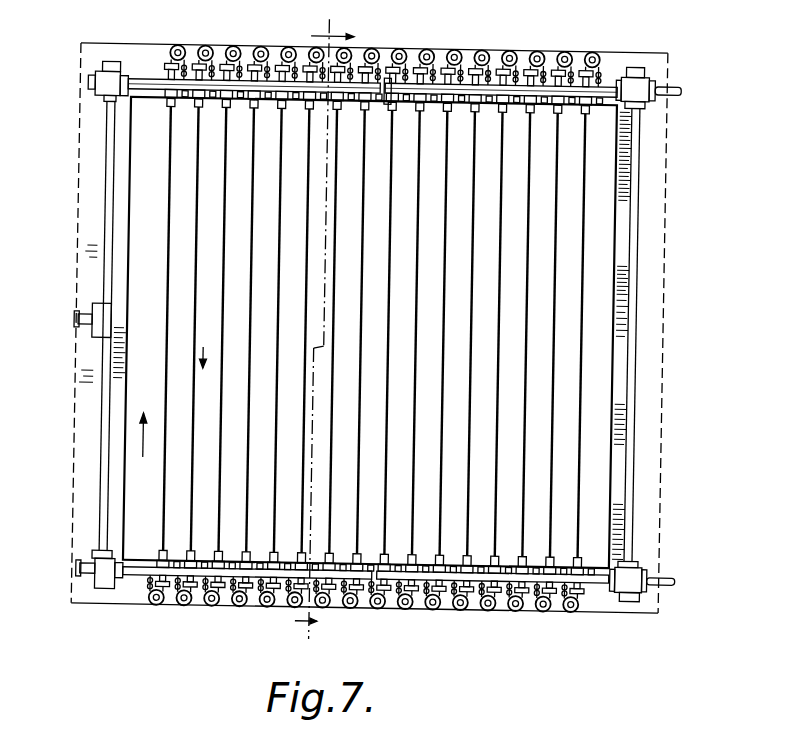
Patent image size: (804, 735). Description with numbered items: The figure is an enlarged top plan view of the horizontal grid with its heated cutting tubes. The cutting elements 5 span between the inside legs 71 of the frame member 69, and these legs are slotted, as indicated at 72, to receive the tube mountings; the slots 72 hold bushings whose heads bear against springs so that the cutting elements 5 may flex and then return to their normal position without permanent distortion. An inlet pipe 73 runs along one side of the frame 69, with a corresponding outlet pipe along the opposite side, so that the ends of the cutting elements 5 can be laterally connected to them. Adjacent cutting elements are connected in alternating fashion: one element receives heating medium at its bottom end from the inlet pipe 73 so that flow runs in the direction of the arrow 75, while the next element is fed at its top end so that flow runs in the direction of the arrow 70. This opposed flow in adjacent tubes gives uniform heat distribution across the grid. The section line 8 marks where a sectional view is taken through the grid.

The cutting elements 5 is at (167, 218).
The section line 8- 8 is at (324, 325).
The frame member 69 is at (629, 60).
The arrow 70 is at (203, 350).
The inside legs 71 is at (459, 100).
The slots 72 is at (444, 554).
The inlet pipe 73 is at (531, 100).
The arrow 75 is at (222, 436).